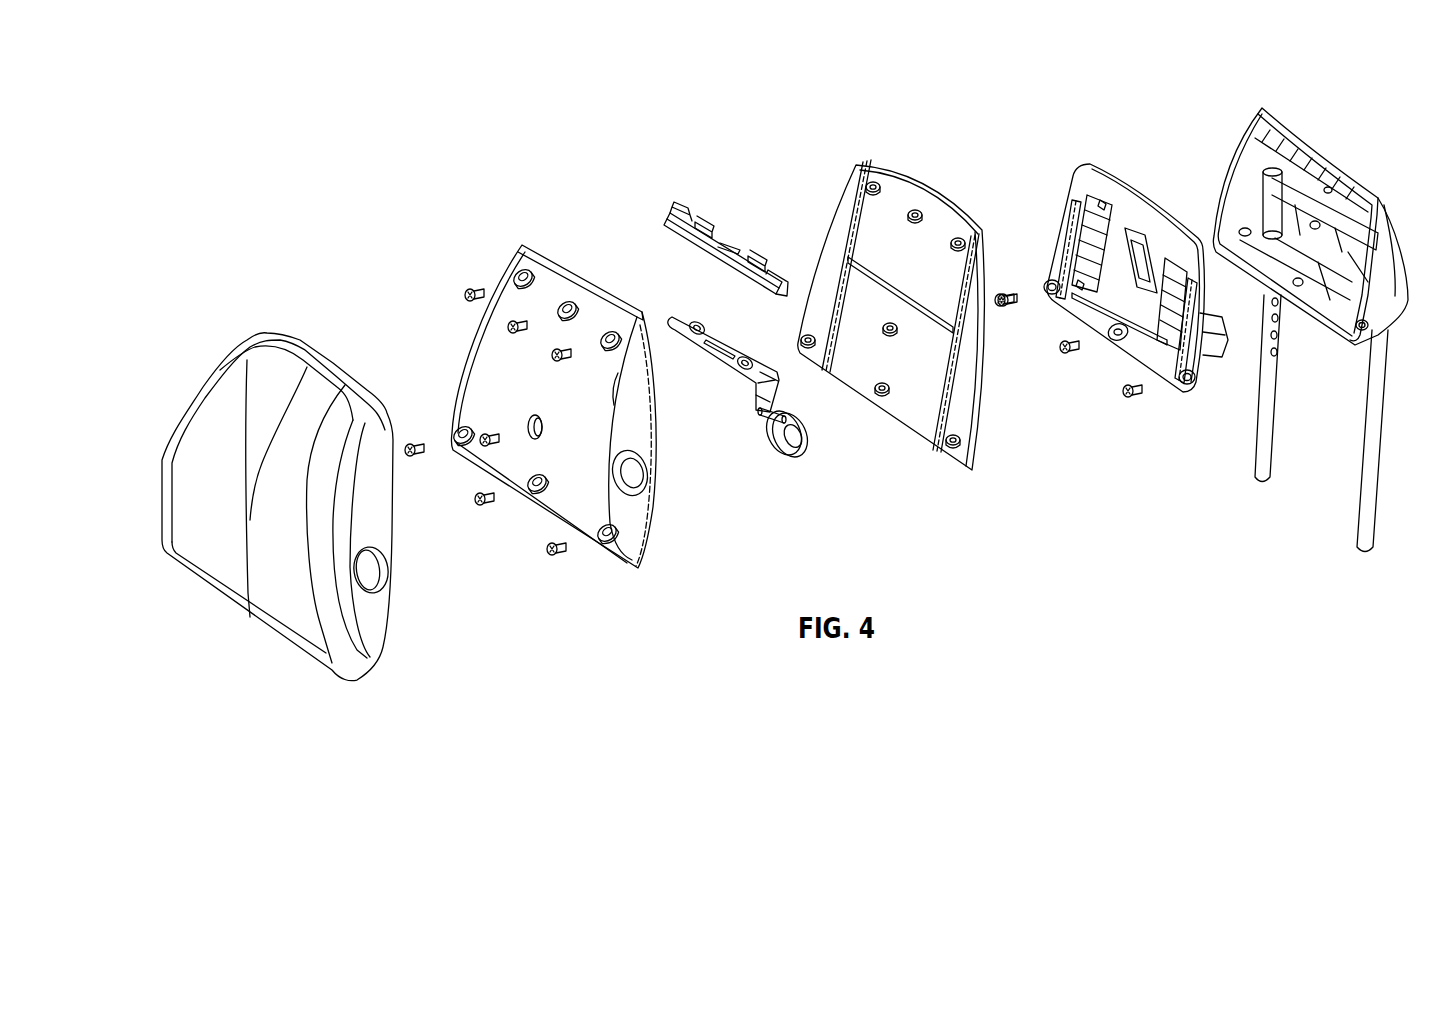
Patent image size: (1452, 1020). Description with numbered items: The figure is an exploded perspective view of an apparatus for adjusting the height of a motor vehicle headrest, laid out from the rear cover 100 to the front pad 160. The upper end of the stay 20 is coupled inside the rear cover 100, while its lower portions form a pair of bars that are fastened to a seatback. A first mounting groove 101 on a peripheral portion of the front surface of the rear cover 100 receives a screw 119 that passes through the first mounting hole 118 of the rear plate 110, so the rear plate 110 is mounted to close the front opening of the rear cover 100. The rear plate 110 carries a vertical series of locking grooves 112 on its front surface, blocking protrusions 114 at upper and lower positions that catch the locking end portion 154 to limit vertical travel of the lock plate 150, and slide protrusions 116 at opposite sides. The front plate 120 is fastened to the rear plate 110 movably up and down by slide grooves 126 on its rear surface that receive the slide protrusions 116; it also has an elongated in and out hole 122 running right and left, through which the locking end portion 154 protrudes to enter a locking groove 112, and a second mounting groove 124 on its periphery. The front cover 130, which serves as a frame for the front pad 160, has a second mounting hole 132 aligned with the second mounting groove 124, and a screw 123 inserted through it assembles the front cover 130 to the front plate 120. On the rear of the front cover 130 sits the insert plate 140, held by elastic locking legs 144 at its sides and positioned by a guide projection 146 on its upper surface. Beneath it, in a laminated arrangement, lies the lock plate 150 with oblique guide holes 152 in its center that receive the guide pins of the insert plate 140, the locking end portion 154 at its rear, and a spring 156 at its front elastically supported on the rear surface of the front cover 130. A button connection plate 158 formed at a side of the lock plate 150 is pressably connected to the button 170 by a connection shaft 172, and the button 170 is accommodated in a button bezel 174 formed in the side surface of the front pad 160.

The stay 20 is at (1289, 423).
The rear cover 100 is at (1233, 130).
The first mounting groove 101 is at (1297, 323).
The rear plate 110 is at (1113, 289).
The locking grooves 112 is at (1088, 193).
The blocking protrusions 114 is at (1103, 203).
The slide protrusions 116 is at (1075, 195).
The first mounting hole 118 is at (1115, 333).
The screw 119 is at (1127, 394).
The front plate 120 is at (906, 297).
The in and out hole 122 is at (930, 324).
The second mounting groove 124 is at (887, 396).
The slide grooves 126 is at (980, 228).
The front cover 130 is at (498, 267).
The second mounting hole 132 is at (535, 490).
The screw 123 is at (555, 556).
The insert plate 140 is at (723, 215).
The elastic locking legs 144 is at (677, 212).
The guide projection 146 is at (750, 260).
The lock plate 150 is at (730, 386).
The guide holes 152 is at (737, 355).
The locking end portion 154 is at (776, 375).
The spring 156 is at (687, 334).
The button connection plate 158 is at (755, 399).
The front pad 160 is at (307, 337).
The button 170 is at (793, 441).
The connection shaft 172 is at (770, 421).
The button bezel 174 is at (778, 442).